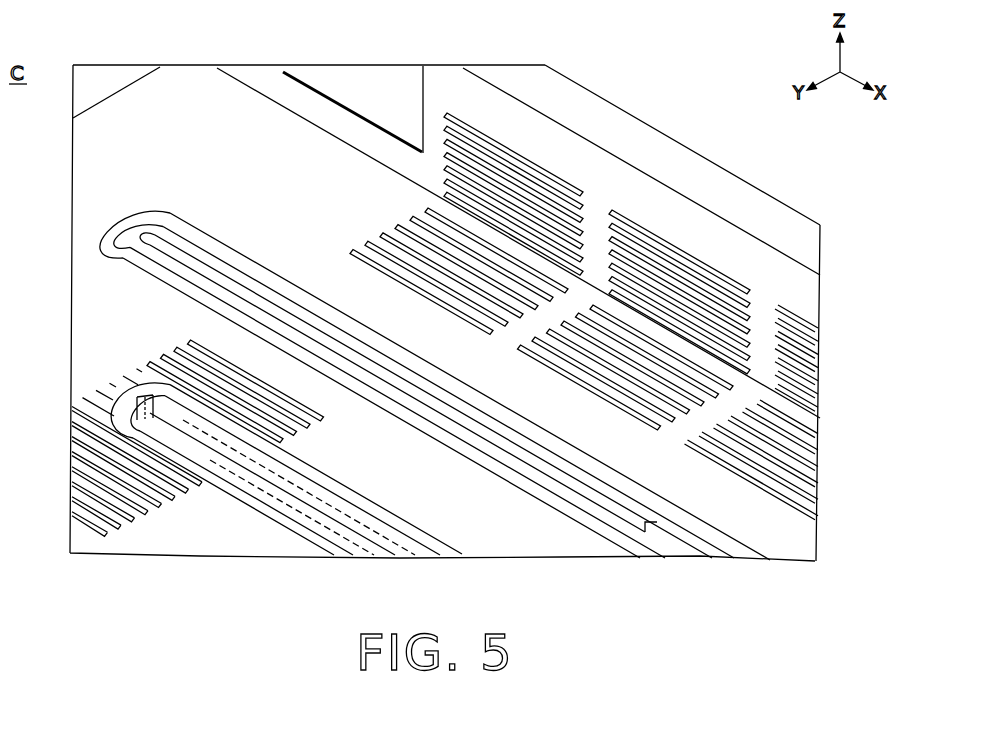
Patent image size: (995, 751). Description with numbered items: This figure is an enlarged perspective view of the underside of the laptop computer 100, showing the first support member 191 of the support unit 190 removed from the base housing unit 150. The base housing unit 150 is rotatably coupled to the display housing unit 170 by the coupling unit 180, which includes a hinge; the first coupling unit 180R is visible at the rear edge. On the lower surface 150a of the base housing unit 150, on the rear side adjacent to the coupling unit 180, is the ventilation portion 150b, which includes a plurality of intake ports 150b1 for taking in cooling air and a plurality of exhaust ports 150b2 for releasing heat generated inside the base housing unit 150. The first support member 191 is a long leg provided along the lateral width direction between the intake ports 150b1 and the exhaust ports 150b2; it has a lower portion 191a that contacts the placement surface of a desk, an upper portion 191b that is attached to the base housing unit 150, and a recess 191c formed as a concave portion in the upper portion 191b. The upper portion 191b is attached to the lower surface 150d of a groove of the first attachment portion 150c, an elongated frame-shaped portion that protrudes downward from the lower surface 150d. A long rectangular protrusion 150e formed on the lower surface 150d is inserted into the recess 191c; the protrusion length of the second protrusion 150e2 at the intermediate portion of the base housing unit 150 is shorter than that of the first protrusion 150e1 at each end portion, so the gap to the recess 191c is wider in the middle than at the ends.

The laptop computer 100 is at (680, 93).
The base housing unit 150 is at (592, 188).
The lower surface 150a is at (157, 327).
The ventilation portion 150b is at (265, 380).
The intake ports 150b1 is at (188, 370).
The exhaust ports 150b2 is at (373, 243).
The first attachment portion 150c is at (530, 470).
The lower surface of the groove 150d is at (473, 412).
The protrusion 150e is at (603, 505).
The first protrusion 150e1 is at (640, 455).
The second protrusion 150e2 is at (677, 547).
The display housing unit 170 is at (578, 110).
The coupling unit 180 is at (442, 107).
The first coupling unit 180R is at (402, 88).
The support unit 190 is at (190, 487).
The first support member 191 is at (237, 485).
The lower portion 191a is at (252, 492).
The upper portion 191b is at (273, 483).
The recess 191c is at (347, 483).